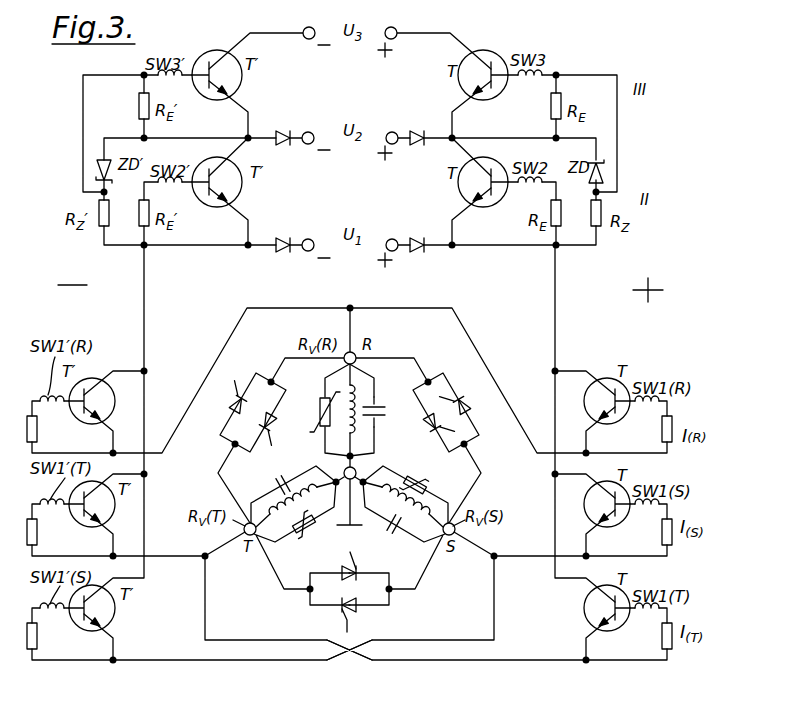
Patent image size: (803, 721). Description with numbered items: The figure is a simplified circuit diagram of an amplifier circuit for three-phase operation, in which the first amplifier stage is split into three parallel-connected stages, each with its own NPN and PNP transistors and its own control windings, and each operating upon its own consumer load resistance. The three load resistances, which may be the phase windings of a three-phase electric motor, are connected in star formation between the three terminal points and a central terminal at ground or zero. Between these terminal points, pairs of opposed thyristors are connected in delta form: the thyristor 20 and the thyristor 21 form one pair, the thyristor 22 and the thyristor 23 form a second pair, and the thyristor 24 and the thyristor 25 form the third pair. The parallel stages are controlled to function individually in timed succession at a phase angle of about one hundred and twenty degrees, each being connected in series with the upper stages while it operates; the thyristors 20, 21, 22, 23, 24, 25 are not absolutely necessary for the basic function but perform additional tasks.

The thyristor 20 is at (225, 406).
The thyristor 21 is at (278, 426).
The thyristor 22 is at (356, 608).
The thyristor 23 is at (334, 565).
The thyristor 24 is at (459, 395).
The thyristor 25 is at (432, 436).